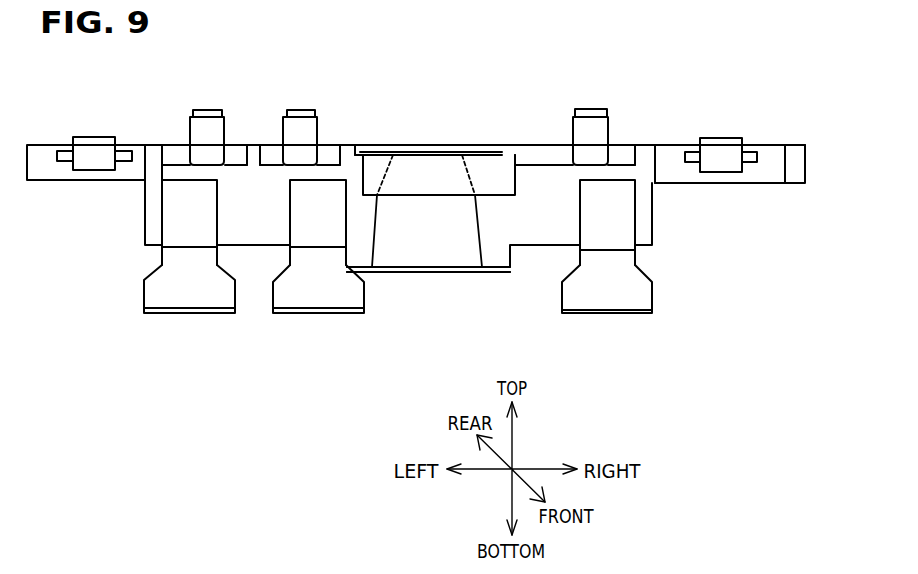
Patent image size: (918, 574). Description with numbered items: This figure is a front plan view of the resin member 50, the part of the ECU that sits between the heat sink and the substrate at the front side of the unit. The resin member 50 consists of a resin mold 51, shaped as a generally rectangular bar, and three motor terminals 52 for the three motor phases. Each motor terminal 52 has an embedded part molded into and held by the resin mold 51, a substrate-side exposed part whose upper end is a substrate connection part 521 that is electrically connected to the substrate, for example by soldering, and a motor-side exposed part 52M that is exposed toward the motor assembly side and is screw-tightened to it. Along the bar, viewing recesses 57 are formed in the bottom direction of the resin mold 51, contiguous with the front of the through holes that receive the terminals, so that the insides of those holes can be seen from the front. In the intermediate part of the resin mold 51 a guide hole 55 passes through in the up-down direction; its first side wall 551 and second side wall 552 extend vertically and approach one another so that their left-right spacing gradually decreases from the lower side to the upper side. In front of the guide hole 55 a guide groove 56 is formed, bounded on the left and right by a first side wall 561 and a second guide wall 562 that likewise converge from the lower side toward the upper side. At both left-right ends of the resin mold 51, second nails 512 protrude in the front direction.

The resin member 50 is at (791, 136).
The resin mold 51 is at (764, 157).
The second nail 512 is at (83, 166).
The substrate connection part 521 is at (192, 113).
The viewing recess 57 is at (252, 163).
The guide groove 56 is at (468, 183).
The first side wall 561 is at (394, 177).
The second guide wall 562 is at (466, 181).
The guide hole 55 is at (386, 217).
The first side wall 551 is at (379, 240).
The second side wall 552 is at (476, 240).
The motor terminal 52 is at (210, 313).
The motor-side exposed part 52M is at (157, 287).